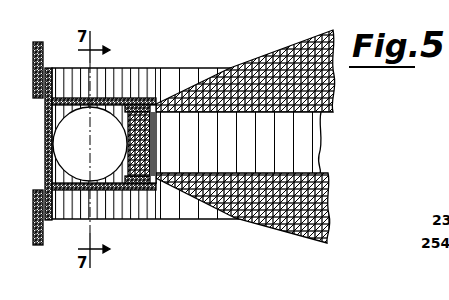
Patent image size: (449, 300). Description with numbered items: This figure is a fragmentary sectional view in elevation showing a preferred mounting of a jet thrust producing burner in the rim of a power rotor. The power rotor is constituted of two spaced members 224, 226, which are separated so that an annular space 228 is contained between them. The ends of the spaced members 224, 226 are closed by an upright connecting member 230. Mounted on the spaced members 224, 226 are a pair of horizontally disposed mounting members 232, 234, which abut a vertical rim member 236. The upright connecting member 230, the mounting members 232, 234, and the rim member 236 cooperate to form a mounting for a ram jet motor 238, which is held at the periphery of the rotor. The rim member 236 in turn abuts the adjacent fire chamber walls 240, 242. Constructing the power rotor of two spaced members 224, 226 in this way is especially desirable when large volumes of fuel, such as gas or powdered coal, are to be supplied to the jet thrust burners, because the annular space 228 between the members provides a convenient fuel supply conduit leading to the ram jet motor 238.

The spaced member 224 is at (326, 110).
The spaced member 226 is at (326, 228).
The annular space 228 is at (323, 148).
The upright connecting member 230 is at (154, 146).
The mounting member 232 is at (100, 103).
The mounting member 234 is at (122, 190).
The rim member 236 is at (50, 113).
The ram jet motor 238 is at (62, 152).
The fire chamber wall 240 is at (40, 44).
The fire chamber wall 242 is at (36, 236).